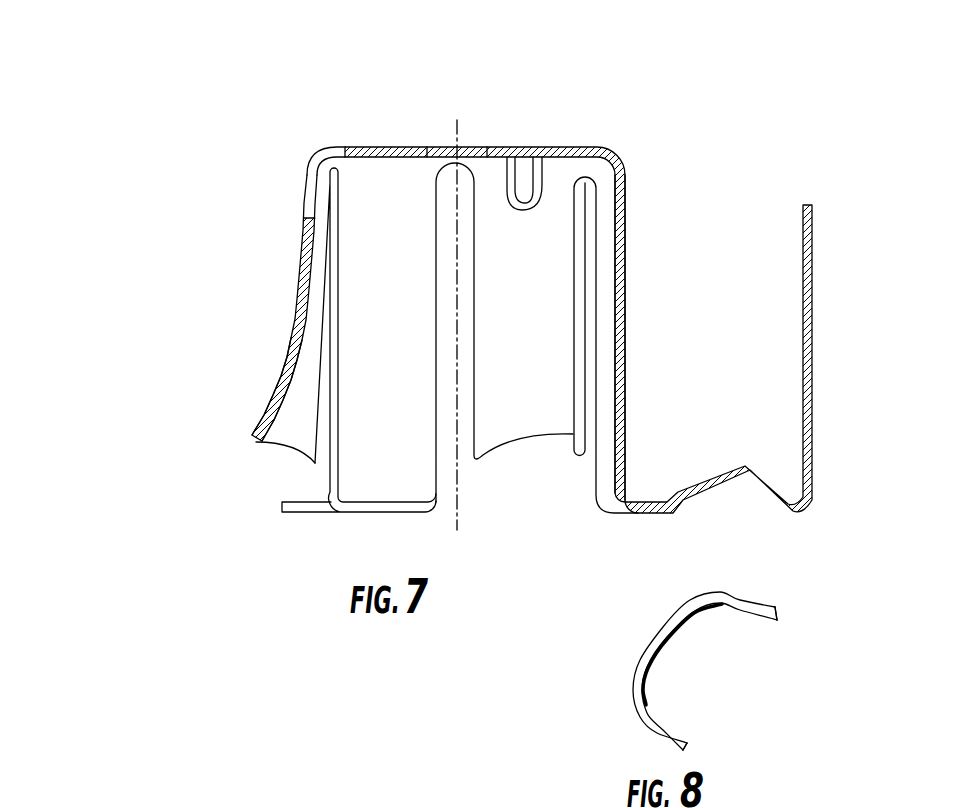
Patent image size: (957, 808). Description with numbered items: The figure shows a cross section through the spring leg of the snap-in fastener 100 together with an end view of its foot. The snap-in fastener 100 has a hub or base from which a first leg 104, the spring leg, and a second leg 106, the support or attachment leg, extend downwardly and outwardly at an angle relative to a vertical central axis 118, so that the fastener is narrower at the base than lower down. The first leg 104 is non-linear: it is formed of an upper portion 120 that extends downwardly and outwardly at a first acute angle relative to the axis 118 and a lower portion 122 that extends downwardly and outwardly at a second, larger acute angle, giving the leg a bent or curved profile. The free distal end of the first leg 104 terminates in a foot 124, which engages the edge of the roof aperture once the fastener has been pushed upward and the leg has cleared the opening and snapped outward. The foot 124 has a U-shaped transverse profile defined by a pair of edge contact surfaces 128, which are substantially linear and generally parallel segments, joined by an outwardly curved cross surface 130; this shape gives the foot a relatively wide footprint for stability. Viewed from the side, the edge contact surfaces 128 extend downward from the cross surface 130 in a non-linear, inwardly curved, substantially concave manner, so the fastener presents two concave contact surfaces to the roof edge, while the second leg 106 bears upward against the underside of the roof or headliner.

In FIG. 7, the snap-in fastener 100 is at (645, 143).
In FIG. 7, the first leg 104 is at (140, 229).
In FIG. 7, the second leg 106 is at (622, 325).
In FIG. 7, the central axis 118 is at (458, 127).
In FIG. 7, the upper portion 120 is at (293, 192).
In FIG. 7, the lower portion 122 is at (278, 338).
In FIG. 7, the foot 124 is at (232, 336).
In FIG. 8, the foot 124 is at (696, 655).
In FIG. 7, the edge contact surfaces 128 is at (294, 450).
In FIG. 8, the edge contact surfaces 128 is at (762, 608).
In FIG. 8, the cross surface 130 is at (647, 663).